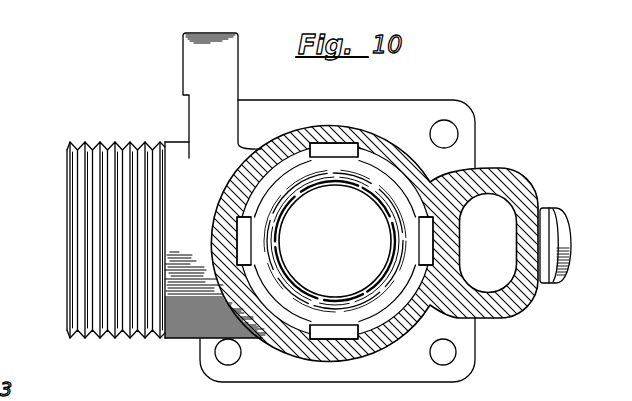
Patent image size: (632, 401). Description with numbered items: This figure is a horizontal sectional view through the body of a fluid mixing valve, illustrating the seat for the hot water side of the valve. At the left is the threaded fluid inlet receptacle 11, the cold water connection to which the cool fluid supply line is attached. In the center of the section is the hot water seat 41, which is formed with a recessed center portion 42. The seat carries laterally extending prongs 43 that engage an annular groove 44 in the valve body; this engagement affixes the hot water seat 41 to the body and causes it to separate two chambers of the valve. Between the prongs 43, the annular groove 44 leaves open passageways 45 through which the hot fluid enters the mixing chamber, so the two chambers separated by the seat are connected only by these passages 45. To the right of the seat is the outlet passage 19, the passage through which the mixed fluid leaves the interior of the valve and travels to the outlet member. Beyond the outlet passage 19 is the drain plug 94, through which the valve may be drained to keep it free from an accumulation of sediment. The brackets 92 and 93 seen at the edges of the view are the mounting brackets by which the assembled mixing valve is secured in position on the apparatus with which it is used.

The fluid inlet receptacle 11 is at (73, 228).
The outlet passage 19 is at (516, 250).
The hot water seat 41 is at (300, 290).
The recessed center portion 42 is at (338, 233).
The laterally extending prongs 43 is at (331, 150).
The annular groove 44 is at (388, 323).
The passageways 45 is at (295, 157).
The bracket 92 is at (0, 58).
The bracket 93 is at (226, 42).
The drain plug 94 is at (560, 286).